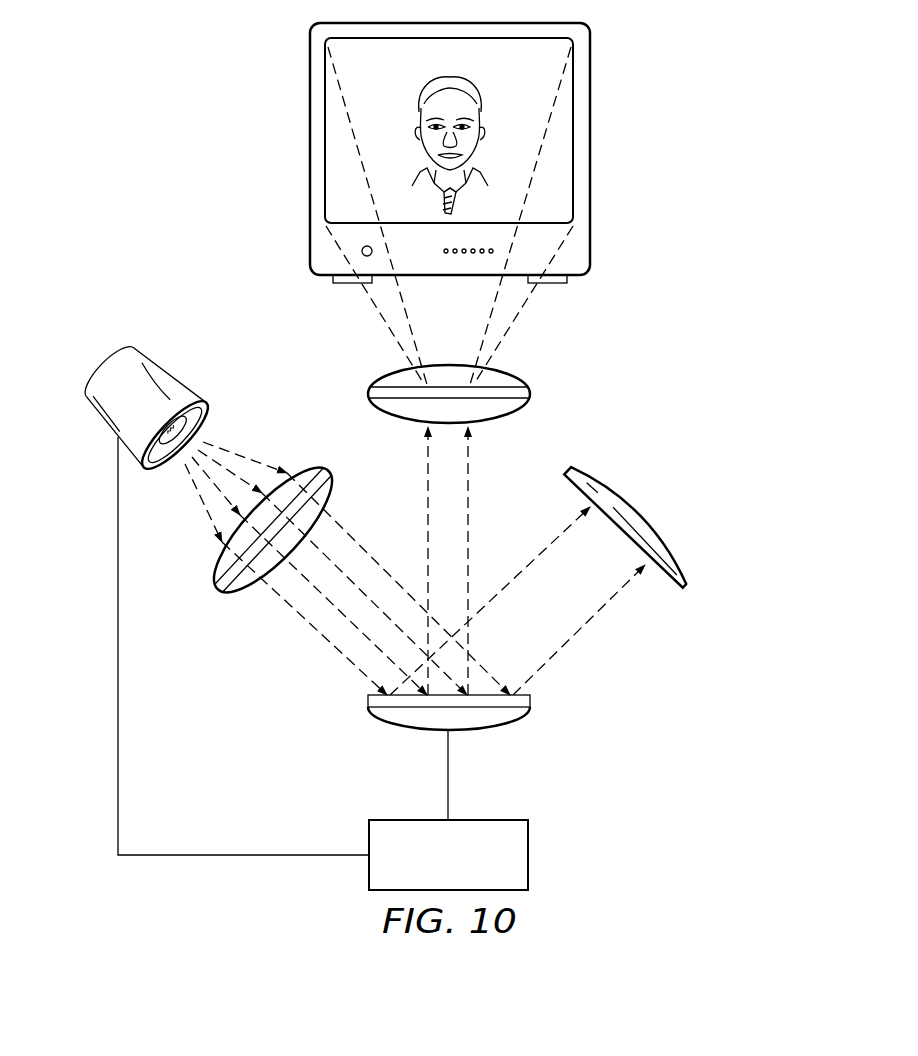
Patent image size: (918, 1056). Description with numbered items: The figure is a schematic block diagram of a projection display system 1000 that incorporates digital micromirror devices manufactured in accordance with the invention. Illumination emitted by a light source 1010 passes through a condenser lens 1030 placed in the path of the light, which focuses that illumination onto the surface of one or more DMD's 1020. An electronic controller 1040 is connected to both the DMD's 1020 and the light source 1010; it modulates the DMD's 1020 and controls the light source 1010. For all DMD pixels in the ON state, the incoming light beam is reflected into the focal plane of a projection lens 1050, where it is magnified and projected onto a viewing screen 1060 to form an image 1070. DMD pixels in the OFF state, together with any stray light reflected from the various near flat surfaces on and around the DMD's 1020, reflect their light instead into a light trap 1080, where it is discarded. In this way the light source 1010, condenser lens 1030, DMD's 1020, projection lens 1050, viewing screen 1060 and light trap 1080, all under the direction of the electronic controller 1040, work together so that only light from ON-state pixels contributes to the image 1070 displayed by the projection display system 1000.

The projection display system 1000 is at (692, 130).
The light source 1010 is at (108, 363).
The DMD 1020 is at (531, 699).
The condenser lens 1030 is at (218, 593).
The electronic controller 1040 is at (528, 862).
The projection lens 1050 is at (531, 388).
The viewing screen 1060 is at (310, 137).
The image 1070 is at (408, 80).
The light trap 1080 is at (667, 492).